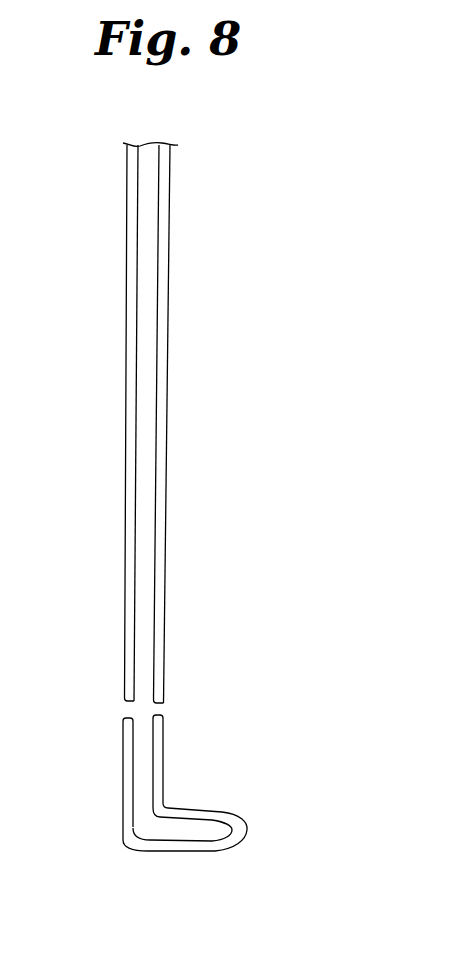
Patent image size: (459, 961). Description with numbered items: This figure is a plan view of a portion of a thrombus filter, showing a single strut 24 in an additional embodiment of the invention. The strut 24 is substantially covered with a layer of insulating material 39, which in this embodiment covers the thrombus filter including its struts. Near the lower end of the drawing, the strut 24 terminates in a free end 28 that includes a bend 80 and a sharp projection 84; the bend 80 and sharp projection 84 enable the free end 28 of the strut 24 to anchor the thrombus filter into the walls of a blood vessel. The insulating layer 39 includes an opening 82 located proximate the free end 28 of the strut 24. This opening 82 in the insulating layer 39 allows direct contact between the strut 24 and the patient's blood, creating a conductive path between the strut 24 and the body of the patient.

The strut 24 is at (147, 253).
The insulating layer 39 is at (167, 370).
The opening 82 is at (156, 702).
The free end 28 is at (105, 775).
The sharp projection 84 is at (266, 830).
The bend 80 is at (148, 828).